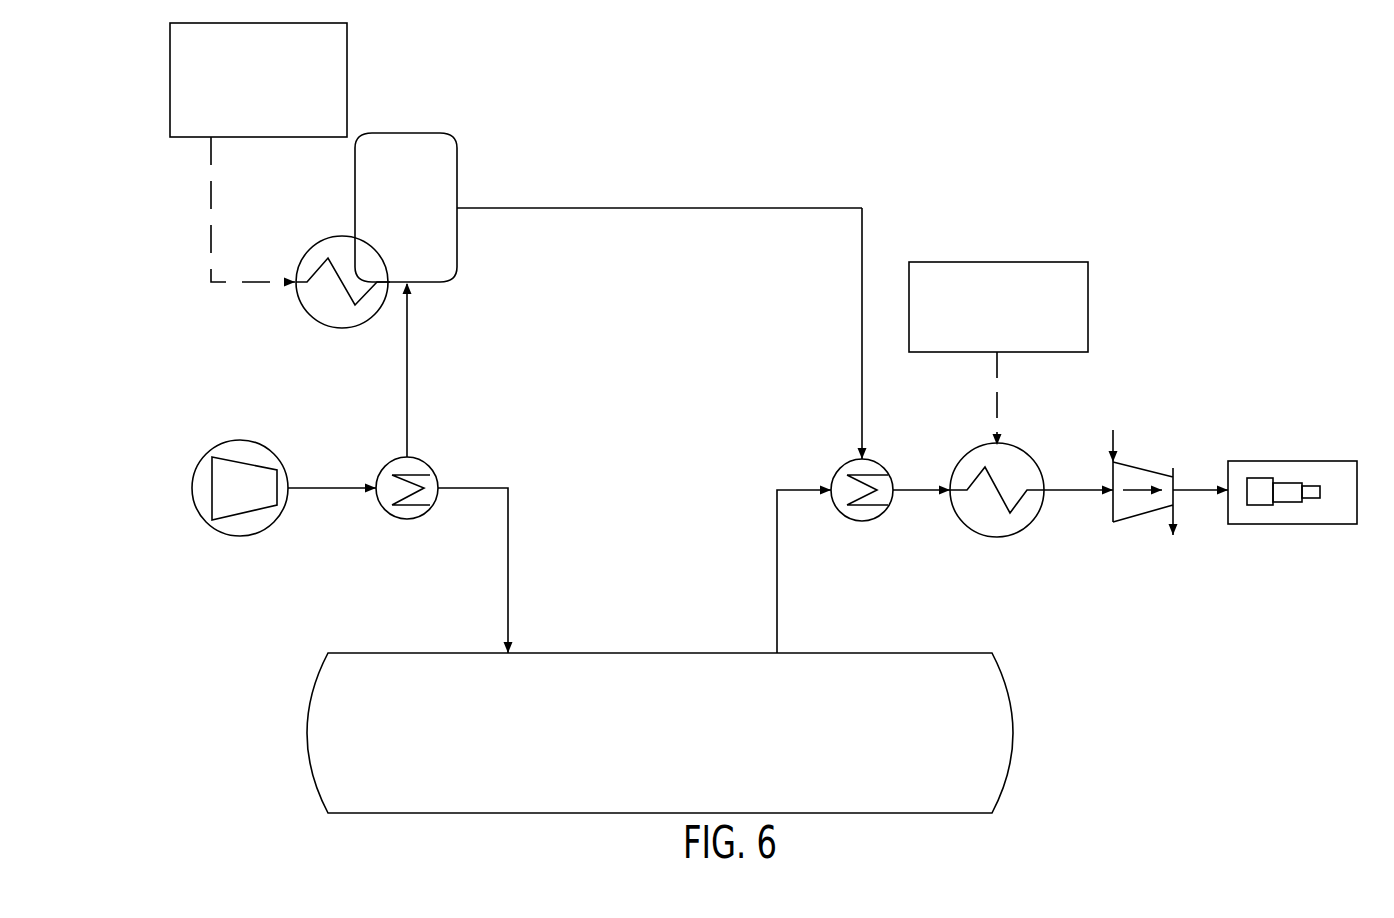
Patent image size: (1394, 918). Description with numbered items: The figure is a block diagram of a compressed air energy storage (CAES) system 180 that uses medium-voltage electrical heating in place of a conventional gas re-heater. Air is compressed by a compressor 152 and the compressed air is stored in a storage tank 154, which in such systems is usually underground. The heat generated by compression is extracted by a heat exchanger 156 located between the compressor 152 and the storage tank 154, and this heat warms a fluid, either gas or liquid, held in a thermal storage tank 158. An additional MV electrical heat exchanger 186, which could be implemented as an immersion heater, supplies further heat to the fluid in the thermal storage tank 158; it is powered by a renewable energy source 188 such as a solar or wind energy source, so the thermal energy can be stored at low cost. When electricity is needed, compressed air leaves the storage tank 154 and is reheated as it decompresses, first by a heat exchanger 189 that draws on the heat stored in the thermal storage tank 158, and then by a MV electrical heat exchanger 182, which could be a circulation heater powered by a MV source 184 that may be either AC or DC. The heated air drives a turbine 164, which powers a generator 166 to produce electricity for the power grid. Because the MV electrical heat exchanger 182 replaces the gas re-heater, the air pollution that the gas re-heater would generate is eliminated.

The compressor 152 is at (282, 457).
The storage tank 154 is at (1013, 735).
The heat exchanger 156 is at (422, 462).
The thermal storage tank 158 is at (405, 133).
The turbine 164 is at (1173, 468).
The generator 166 is at (1280, 524).
The CAES system 180 is at (918, 113).
The MV electrical heat exchanger 182 is at (997, 537).
The MV source 184 is at (1003, 262).
The MV electrical heat exchanger 186 is at (307, 255).
The renewable energy source 188 is at (347, 23).
The heat exchanger 189 is at (878, 463).